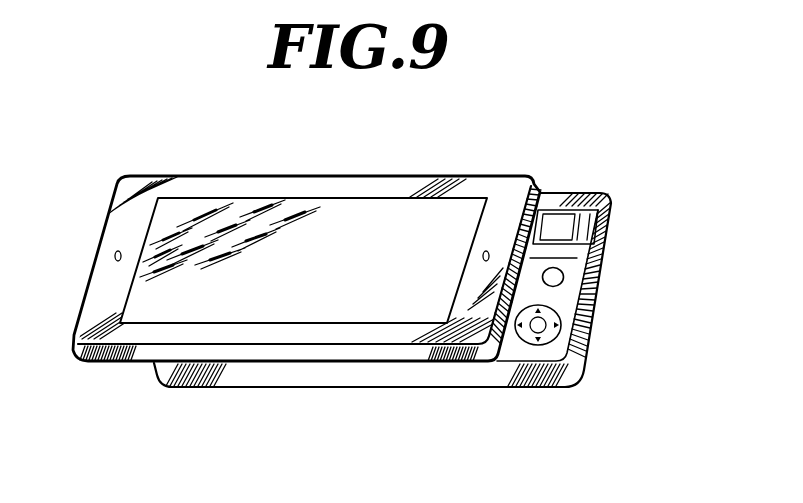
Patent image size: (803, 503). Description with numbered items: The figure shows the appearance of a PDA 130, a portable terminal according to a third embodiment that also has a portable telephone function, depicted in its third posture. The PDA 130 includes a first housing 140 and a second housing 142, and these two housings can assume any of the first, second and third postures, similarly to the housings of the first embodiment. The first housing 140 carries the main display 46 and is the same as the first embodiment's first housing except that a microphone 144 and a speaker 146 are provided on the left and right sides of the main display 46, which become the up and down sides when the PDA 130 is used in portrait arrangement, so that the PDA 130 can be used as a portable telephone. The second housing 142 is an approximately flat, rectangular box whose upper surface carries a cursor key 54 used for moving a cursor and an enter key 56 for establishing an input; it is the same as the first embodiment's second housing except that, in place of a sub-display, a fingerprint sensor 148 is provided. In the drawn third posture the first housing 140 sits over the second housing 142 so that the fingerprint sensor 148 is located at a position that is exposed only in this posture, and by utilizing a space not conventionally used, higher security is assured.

The PDA 130 is at (620, 173).
The first housing 140 is at (483, 175).
The second housing 142 is at (450, 389).
The microphone 144 is at (487, 250).
The speaker 146 is at (118, 250).
The main display 46 is at (357, 208).
The fingerprint sensor 148 is at (598, 222).
The enter key 56 is at (565, 277).
The cursor key 54 is at (558, 332).